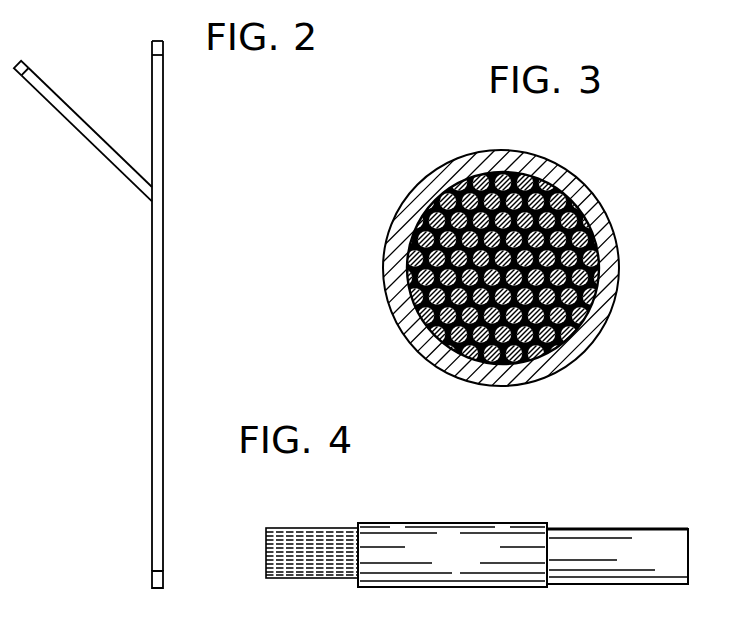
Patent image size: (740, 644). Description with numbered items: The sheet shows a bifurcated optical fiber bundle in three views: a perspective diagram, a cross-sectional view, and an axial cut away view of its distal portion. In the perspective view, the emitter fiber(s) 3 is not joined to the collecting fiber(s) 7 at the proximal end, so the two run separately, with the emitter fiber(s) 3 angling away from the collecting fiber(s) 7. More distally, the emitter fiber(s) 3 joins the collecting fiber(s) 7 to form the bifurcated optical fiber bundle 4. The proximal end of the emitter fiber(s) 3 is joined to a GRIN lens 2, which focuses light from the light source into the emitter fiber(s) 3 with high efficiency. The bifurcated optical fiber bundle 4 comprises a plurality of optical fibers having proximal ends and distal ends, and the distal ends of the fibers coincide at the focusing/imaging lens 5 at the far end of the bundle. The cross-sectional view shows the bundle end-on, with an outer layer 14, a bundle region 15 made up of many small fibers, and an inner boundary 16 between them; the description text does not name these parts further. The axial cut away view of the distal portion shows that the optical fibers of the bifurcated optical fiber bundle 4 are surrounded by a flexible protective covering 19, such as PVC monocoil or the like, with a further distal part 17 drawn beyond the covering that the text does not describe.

In FIG. 2, the GRIN lens 2 is at (22, 61).
In FIG. 2, the emitter fiber(s) 3 is at (102, 153).
In FIG. 2, the bifurcated optical fiber bundle 4 is at (152, 380).
In FIG. 4, the bifurcated optical fiber bundle 4 is at (309, 528).
In FIG. 2, the focusing/imaging lens 5 is at (152, 578).
In FIG. 2, the collecting fiber(s) 7 is at (164, 102).
In FIG. 3, the outer sheath 14 is at (440, 166).
In FIG. 3, the fiber bundle 15 is at (592, 288).
In FIG. 3, the inner jacket 16 is at (575, 202).
In FIG. 4, the connector sleeve 17 is at (660, 529).
In FIG. 4, the flexible protective covering 19 is at (465, 523).